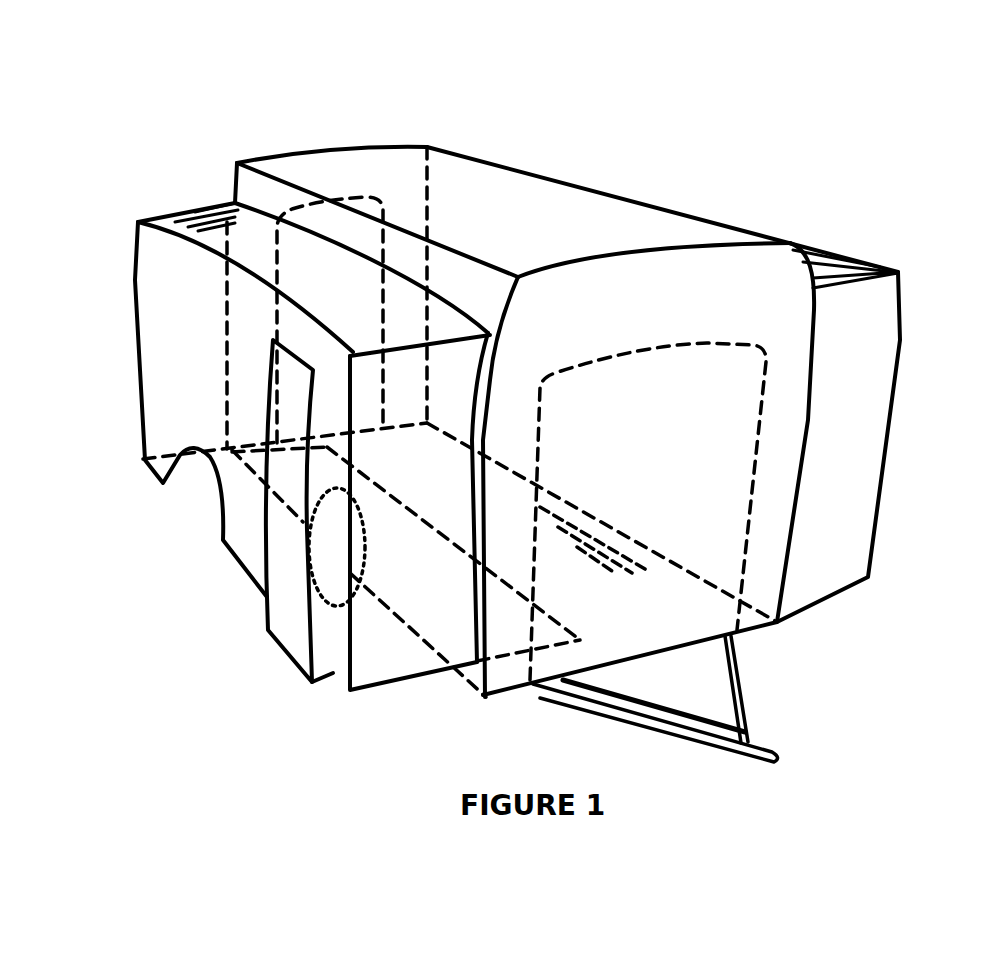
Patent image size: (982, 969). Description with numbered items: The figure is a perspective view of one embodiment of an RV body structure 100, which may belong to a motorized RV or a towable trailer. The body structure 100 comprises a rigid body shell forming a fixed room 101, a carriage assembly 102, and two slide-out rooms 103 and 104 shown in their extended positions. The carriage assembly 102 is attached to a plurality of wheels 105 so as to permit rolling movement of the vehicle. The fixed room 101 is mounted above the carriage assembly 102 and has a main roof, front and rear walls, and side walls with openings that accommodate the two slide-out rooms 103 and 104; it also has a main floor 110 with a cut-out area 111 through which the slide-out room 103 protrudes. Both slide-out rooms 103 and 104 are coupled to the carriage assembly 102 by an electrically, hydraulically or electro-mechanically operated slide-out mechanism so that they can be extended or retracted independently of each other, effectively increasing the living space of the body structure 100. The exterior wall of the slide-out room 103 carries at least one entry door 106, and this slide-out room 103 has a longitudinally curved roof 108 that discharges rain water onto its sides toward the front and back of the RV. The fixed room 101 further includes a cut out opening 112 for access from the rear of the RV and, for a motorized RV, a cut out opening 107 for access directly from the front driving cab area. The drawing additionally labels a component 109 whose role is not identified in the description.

The RV body structure 100 is at (680, 122).
The fixed room 101 is at (340, 155).
The carriage assembly 102 is at (557, 687).
The slide-out room 103 is at (178, 418).
The slide-out room 104 is at (858, 443).
The wheels 105 is at (340, 555).
The entry door 106 is at (290, 373).
The cut out opening 107 is at (603, 360).
The longitudinally curved roof 108 is at (190, 208).
The left module 109 is at (150, 280).
The main floor 110 is at (578, 568).
The cut-out area 111 is at (372, 525).
The cut out opening 112 is at (350, 197).